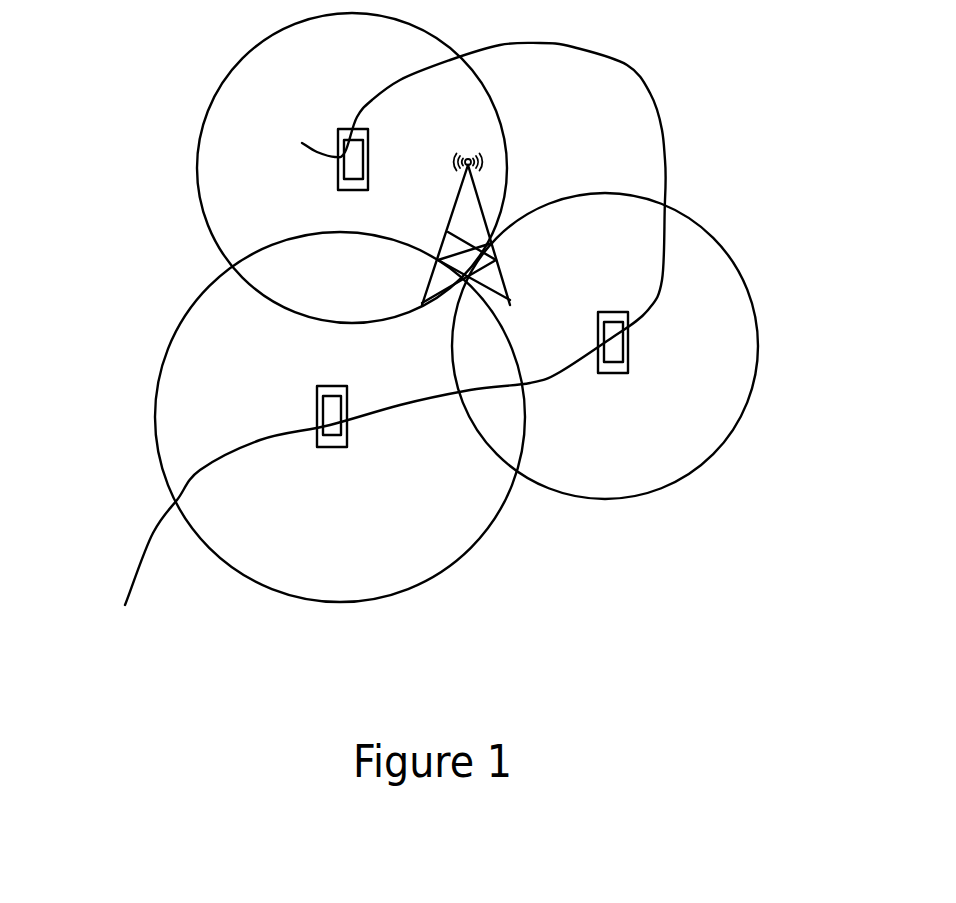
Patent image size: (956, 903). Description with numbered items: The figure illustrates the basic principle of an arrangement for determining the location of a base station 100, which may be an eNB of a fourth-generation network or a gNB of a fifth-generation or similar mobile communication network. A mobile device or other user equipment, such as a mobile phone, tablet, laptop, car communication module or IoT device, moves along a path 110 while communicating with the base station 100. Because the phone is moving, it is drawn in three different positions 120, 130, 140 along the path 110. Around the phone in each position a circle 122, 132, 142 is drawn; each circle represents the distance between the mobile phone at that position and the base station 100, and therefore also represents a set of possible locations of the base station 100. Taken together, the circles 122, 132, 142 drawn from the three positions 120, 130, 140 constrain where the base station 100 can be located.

The base station 100 is at (477, 198).
The path 110 is at (140, 558).
The first position of the mobile phone 120 is at (333, 386).
The circle around the first position 122 is at (177, 327).
The second position of the mobile phone 130 is at (613, 373).
The circle around the second position 132 is at (728, 250).
The third position of the mobile phone 140 is at (369, 143).
The circle around the third position 142 is at (198, 183).